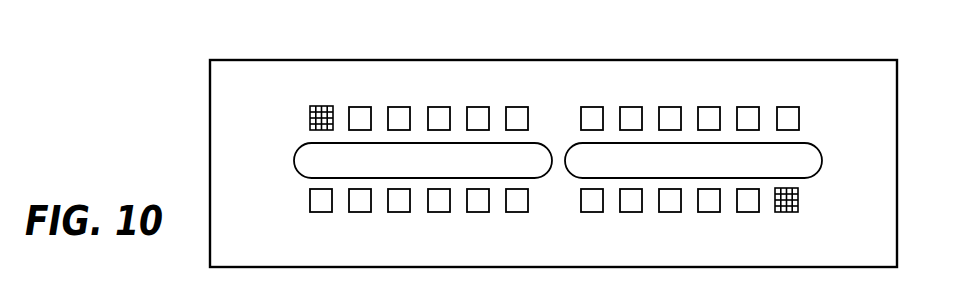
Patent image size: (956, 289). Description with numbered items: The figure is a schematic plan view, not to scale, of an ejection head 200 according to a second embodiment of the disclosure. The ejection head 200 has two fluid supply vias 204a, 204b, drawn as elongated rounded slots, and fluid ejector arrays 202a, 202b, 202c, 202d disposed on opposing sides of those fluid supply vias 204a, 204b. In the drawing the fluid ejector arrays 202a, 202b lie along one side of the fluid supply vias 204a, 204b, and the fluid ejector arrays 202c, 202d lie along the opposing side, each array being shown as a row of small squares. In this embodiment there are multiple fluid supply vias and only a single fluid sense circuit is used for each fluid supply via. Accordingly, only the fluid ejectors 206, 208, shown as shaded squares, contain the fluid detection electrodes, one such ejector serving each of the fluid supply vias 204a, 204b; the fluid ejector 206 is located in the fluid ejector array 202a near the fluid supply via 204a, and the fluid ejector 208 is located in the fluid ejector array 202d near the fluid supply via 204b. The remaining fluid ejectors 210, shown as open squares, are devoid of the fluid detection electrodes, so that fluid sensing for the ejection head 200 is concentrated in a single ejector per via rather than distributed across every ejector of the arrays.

The ejection head 200 is at (157, 147).
The fluid ejector array 202a is at (293, 121).
The fluid ejector array 202b is at (814, 120).
The fluid ejector array 202c is at (295, 200).
The fluid ejector array 202d is at (813, 198).
The fluid supply via 204a is at (423, 160).
The fluid supply via 204b is at (693, 160).
The fluid ejector 206 is at (320, 110).
The fluid ejector 208 is at (798, 207).
The fluid ejector 210 is at (438, 118).